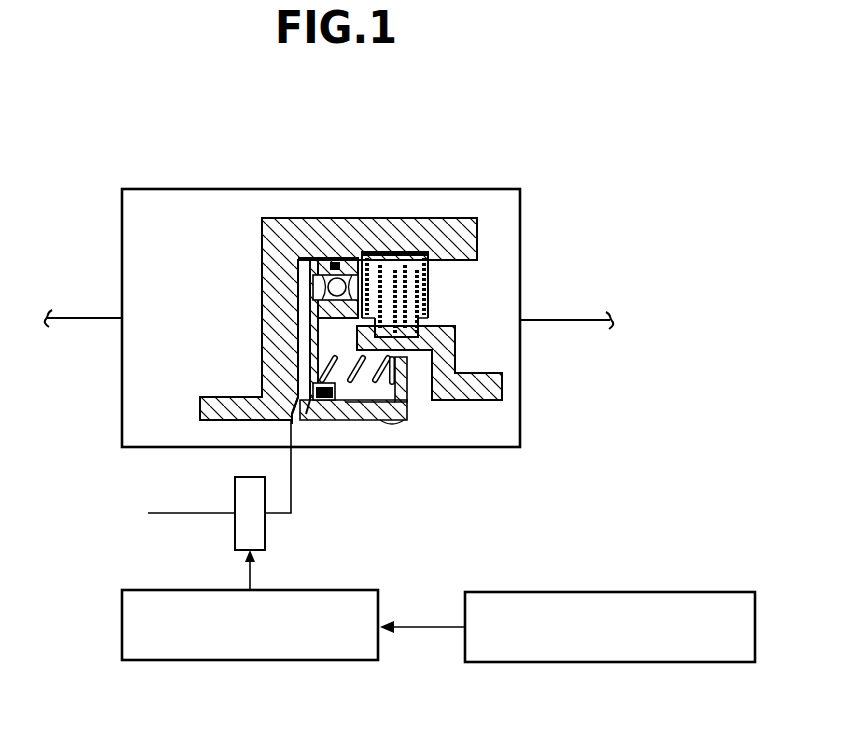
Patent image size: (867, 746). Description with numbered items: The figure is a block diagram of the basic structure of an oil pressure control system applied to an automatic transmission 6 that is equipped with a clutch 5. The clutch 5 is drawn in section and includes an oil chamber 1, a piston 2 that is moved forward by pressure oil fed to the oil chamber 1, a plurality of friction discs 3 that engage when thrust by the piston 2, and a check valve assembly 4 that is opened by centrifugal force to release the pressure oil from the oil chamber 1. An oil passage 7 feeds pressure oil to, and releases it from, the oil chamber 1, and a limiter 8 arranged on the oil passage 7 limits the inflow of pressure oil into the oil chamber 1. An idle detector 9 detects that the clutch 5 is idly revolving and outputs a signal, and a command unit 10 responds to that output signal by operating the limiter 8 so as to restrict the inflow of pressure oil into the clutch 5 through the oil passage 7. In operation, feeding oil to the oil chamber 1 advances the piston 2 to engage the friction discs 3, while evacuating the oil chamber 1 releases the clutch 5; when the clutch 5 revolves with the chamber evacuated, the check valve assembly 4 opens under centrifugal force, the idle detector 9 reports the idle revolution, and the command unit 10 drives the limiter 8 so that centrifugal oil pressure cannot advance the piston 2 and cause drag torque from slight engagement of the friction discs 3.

The oil chamber 1 is at (305, 253).
The piston 2 is at (318, 338).
The friction discs 3 is at (413, 258).
The check valve assembly 4 is at (354, 248).
The clutch 5 is at (499, 275).
The automatic transmission 6 is at (520, 385).
The oil passage 7 is at (291, 492).
The limiter 8 is at (235, 496).
The idle detector 9 is at (606, 662).
The command unit 10 is at (249, 660).